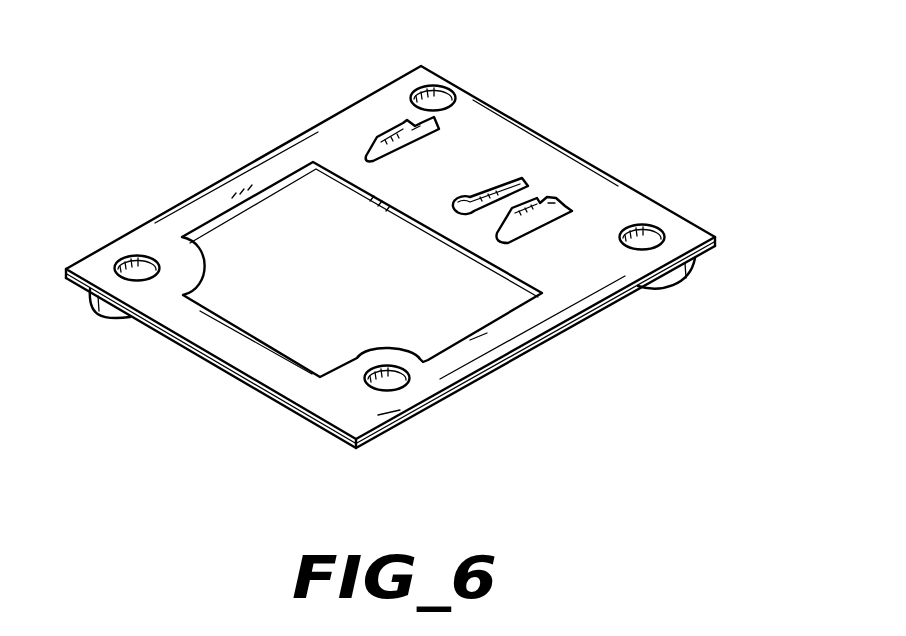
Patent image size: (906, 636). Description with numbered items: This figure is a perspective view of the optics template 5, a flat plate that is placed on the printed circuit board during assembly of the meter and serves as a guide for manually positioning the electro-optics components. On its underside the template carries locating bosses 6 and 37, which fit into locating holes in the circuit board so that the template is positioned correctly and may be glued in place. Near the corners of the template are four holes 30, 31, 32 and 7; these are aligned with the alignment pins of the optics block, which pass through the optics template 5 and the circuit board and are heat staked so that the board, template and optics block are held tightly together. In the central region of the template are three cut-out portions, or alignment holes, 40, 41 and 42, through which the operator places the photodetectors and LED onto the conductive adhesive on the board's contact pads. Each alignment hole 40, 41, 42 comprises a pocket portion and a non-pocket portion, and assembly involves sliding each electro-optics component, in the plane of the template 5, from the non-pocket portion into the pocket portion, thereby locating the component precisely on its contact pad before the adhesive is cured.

The optics template 5 is at (236, 378).
The locating boss 6 is at (663, 288).
The hole 7 is at (642, 228).
The hole 30 is at (392, 383).
The hole 31 is at (132, 256).
The hole 32 is at (431, 91).
The locating boss 37 is at (123, 327).
The alignment hole 40 is at (368, 152).
The alignment hole 41 is at (462, 198).
The alignment hole 42 is at (506, 244).